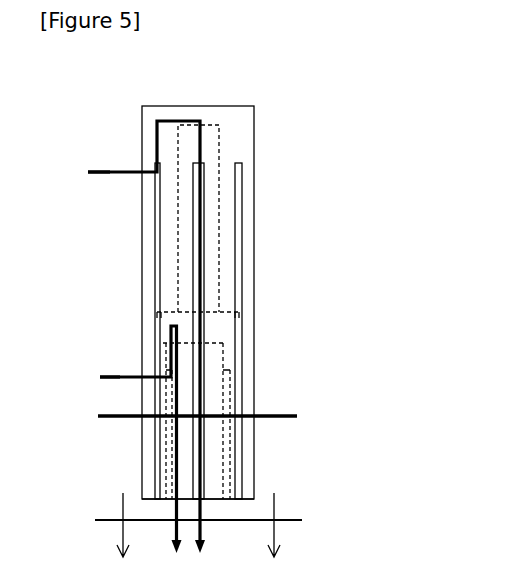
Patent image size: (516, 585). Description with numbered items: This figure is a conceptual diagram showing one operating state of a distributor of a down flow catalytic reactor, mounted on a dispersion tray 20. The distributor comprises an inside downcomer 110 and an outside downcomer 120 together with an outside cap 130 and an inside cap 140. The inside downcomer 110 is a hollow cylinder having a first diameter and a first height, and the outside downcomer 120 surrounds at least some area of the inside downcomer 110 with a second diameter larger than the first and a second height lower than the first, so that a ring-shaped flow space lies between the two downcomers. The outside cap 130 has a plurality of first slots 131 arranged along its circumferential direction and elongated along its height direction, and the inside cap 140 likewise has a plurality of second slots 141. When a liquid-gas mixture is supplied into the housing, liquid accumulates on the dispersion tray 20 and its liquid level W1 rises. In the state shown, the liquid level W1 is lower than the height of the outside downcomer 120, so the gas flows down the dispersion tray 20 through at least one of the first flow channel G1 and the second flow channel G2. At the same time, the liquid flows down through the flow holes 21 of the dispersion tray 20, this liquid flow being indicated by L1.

The outside cap 130 is at (226, 105).
The inside downcomer 110 is at (219, 134).
The first slot 131 is at (243, 170).
The inside cap 140 is at (226, 312).
The second slot 141 is at (170, 389).
The outside downcomer 120 is at (225, 499).
The dispersion tray 20 is at (108, 513).
The flow hole 21 is at (125, 522).
The liquid flow L1 is at (275, 502).
The liquid level W1 is at (279, 413).
The first flow channel G1 is at (89, 176).
The second flow channel G2 is at (113, 375).